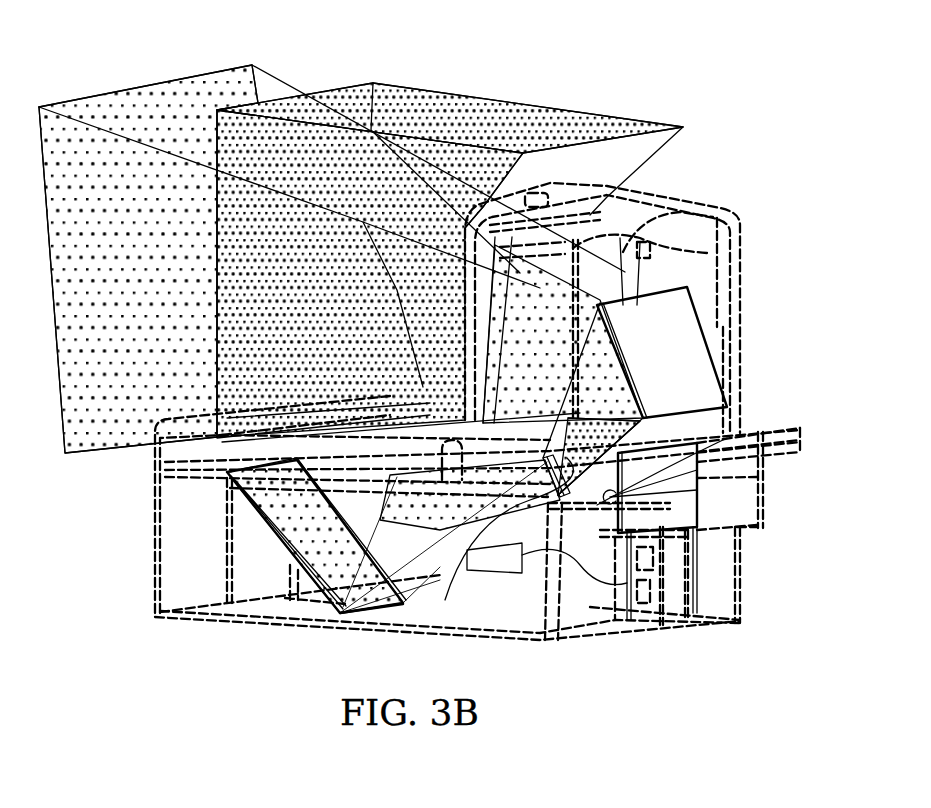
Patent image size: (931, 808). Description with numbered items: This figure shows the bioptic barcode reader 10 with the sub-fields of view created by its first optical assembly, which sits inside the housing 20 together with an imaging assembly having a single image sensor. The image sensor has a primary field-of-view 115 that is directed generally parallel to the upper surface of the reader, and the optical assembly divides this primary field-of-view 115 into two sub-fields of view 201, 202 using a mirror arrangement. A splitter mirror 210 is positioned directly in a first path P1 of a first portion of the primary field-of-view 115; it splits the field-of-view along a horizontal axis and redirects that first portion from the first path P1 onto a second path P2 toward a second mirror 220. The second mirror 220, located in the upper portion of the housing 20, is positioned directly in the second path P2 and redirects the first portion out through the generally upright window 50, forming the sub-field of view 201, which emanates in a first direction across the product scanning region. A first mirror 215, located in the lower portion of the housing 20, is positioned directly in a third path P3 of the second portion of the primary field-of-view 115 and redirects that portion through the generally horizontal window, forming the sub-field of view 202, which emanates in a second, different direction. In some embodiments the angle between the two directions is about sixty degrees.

The bioptic barcode reader 10 is at (741, 71).
The housing 20 is at (754, 270).
The generally upright window 50 is at (623, 240).
The sub-field of view 201 is at (130, 90).
The sub-field of view 202 is at (568, 112).
The second mirror 220 is at (688, 341).
The splitter mirror 210 is at (423, 598).
The first mirror 215 is at (303, 598).
The primary field-of-view 115 is at (573, 525).
The first path P1 is at (733, 525).
The second path P2 is at (737, 462).
The third path P3 is at (467, 550).